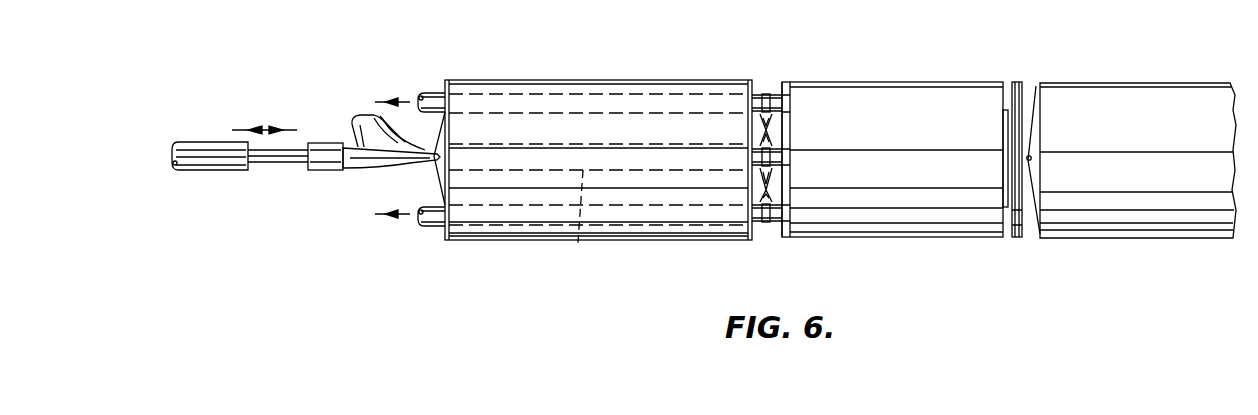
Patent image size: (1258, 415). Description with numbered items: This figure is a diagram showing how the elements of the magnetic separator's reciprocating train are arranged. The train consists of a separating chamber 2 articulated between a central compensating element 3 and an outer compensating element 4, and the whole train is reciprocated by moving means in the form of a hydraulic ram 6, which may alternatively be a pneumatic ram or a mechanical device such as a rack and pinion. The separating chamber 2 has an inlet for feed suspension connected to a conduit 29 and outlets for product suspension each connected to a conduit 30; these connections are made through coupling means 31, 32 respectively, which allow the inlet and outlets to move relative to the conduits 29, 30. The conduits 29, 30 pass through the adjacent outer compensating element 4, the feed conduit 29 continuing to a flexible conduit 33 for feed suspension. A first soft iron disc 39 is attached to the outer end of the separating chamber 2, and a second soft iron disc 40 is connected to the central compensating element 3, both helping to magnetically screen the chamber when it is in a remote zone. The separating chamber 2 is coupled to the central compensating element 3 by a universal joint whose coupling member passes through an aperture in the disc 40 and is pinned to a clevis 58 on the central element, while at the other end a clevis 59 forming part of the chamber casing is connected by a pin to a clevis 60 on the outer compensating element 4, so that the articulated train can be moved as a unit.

The separating chamber 2 is at (897, 145).
The central compensating element 3 is at (1150, 148).
The outer compensating element 4 is at (604, 138).
The hydraulic ram 6 is at (201, 151).
The conduit 29 is at (581, 219).
The conduit 30 is at (410, 160).
The coupling means 31 is at (775, 168).
The coupling means 32 is at (763, 96).
The flexible conduit 33 is at (360, 113).
The first soft iron disc 39 is at (786, 94).
The second soft iron disc 40 is at (1020, 80).
The clevis 58 is at (1033, 125).
The clevis 59 is at (766, 96).
The clevis 60 is at (757, 188).